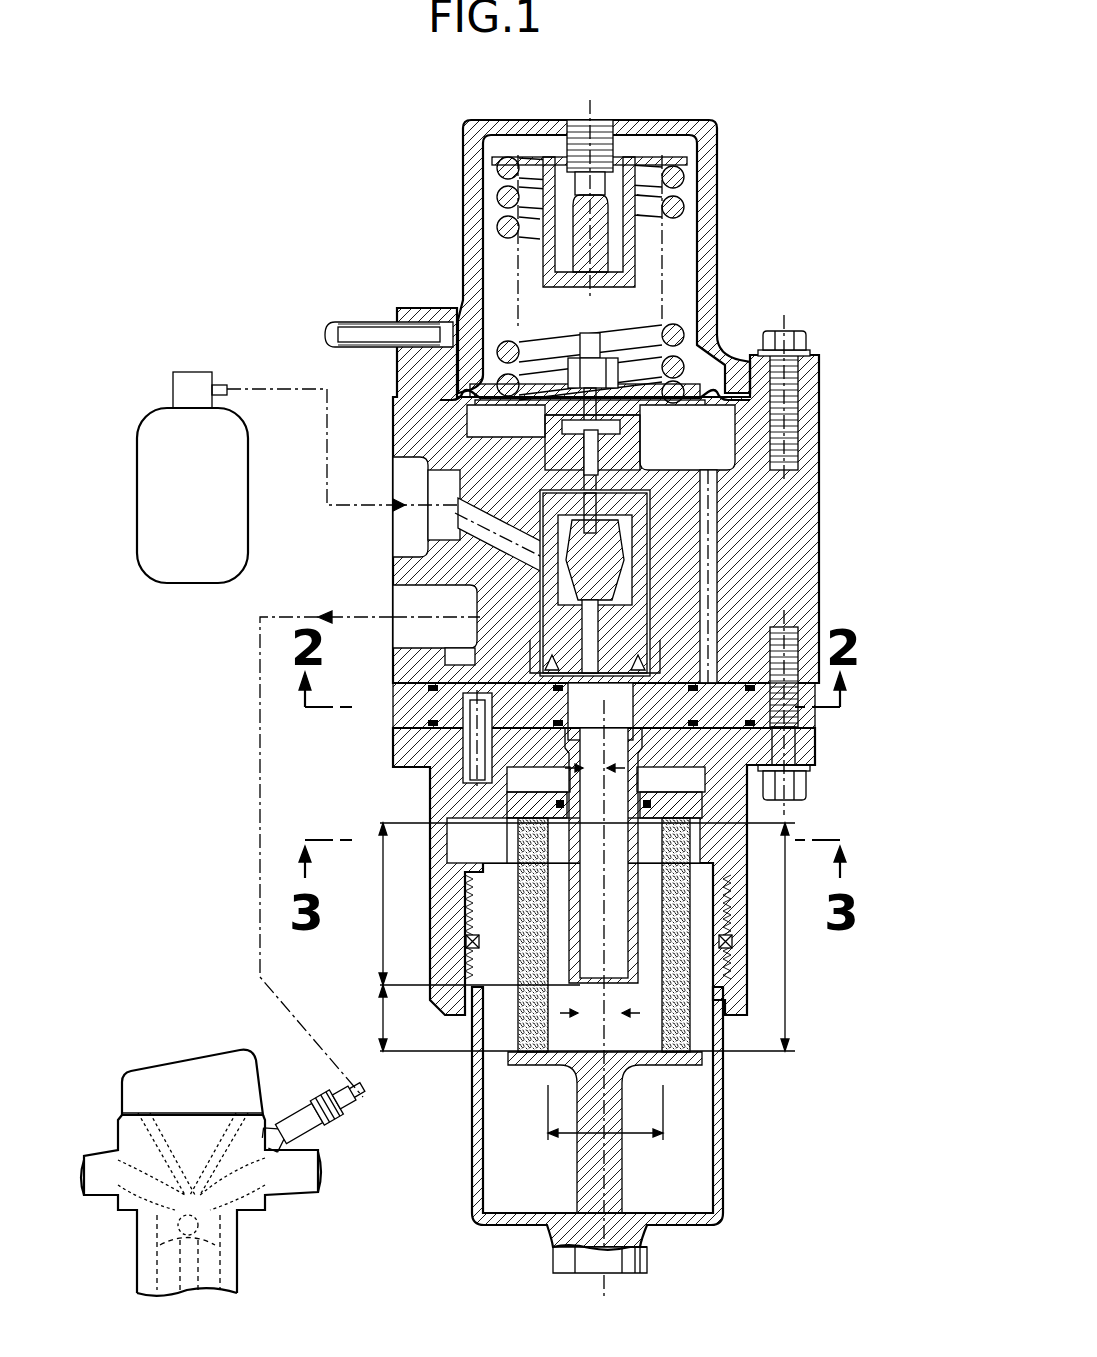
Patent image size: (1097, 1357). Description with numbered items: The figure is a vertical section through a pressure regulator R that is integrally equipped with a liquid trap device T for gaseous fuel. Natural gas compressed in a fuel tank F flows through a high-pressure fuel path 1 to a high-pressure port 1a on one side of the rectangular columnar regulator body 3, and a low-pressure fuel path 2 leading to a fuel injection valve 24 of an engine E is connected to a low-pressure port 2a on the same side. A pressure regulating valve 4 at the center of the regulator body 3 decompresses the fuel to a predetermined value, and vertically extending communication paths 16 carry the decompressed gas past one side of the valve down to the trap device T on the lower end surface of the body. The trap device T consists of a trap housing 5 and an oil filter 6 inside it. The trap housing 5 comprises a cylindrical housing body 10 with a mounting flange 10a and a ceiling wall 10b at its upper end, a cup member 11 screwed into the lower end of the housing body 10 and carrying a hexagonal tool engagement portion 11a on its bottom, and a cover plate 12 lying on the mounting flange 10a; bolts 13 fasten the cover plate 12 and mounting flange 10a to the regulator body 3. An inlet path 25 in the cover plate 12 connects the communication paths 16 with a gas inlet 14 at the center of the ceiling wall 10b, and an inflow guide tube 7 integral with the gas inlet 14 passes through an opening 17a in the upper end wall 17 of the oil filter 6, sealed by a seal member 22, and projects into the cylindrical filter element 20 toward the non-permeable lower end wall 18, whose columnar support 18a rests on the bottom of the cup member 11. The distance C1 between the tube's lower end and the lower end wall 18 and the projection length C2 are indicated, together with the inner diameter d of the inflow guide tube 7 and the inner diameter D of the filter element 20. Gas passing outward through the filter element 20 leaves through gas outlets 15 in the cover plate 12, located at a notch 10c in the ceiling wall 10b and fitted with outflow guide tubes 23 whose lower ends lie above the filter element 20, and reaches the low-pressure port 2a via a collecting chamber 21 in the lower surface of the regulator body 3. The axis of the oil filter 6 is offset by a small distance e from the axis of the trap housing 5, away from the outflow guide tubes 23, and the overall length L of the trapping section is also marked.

The high-pressure fuel path 1 is at (268, 388).
The high-pressure port 1a is at (393, 472).
The low-pressure fuel path 2 is at (258, 858).
The low-pressure port 2a is at (393, 600).
The regulator body 3 is at (590, 538).
The pressure regulating valve 4 is at (643, 510).
The trap housing 5 is at (725, 1160).
The oil filter 6 is at (690, 1032).
The inflow guide tube 7 is at (548, 945).
The housing body 10 is at (564, 906).
The mounting flange 10a is at (398, 752).
The ceiling wall 10b is at (670, 745).
The notch 10c is at (540, 750).
The cup member 11 is at (606, 1135).
The tool engagement portion 11a is at (553, 1262).
The cover plate 12 is at (570, 706).
The bolts 13 is at (783, 790).
The gas inlet 14 is at (663, 742).
The gas outlets 15 is at (530, 698).
The communication paths 16 is at (700, 553).
The upper end wall 17 is at (556, 1000).
The opening 17a is at (630, 825).
The lower end wall 18 is at (600, 1132).
The columnar support 18a is at (580, 1180).
The filter element 20 is at (516, 1017).
The collecting chamber 21 is at (458, 660).
The seal member 22 is at (510, 797).
The outflow guide tubes 23 is at (462, 775).
The fuel injection valve 24 is at (300, 1118).
The inlet path 25 is at (686, 708).
The pressure regulator R is at (740, 270).
The fuel tank F is at (205, 510).
The engine E is at (170, 1057).
The liquid trap device T is at (750, 950).
The length dimension L is at (588, 937).
The inner diameter of filter element D is at (637, 1135).
The inner diameter of inflow guide tube d is at (600, 1013).
The offset distance e is at (600, 772).
The distance between guide tube lower end and lower end wall C1 is at (380, 1018).
The projection length of inflow guide tube C2 is at (380, 904).